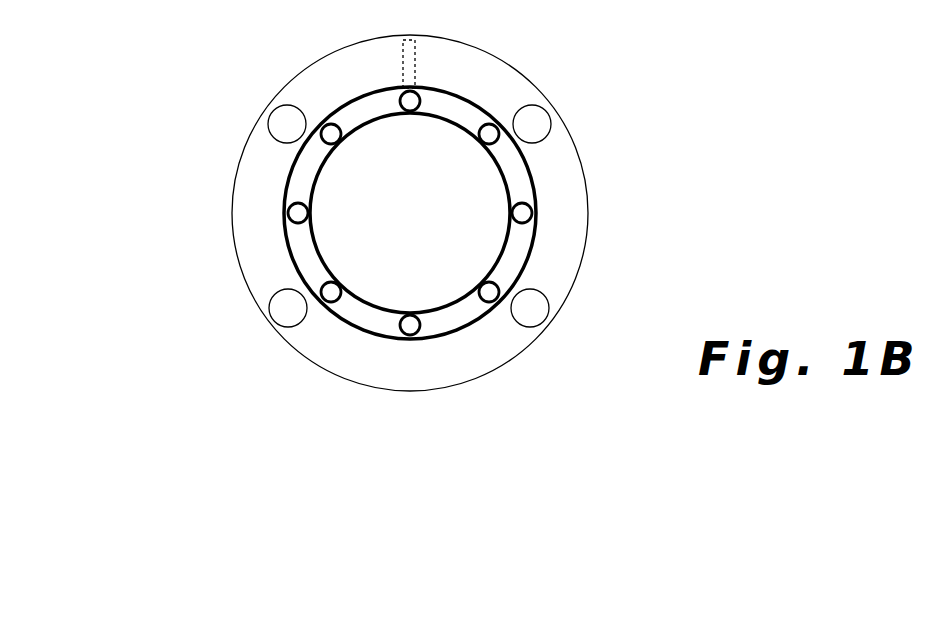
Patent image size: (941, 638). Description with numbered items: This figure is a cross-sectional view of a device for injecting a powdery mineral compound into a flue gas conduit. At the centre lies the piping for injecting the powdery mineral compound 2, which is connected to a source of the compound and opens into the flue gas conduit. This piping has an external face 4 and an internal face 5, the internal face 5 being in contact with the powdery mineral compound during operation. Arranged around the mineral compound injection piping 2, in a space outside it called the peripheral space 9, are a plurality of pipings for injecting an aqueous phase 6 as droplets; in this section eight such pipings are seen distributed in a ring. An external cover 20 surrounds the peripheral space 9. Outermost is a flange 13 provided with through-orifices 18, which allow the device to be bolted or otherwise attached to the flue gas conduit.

The piping for injecting the powdery mineral compound 2 is at (410, 213).
The external face 4 is at (510, 186).
The internal face 5 is at (497, 170).
The pipings for injecting an aqueous phase 6 is at (404, 95).
The peripheral space 9 is at (518, 248).
The flange 13 is at (553, 283).
The through-orifices 18 is at (280, 123).
The external cover 20 is at (465, 330).